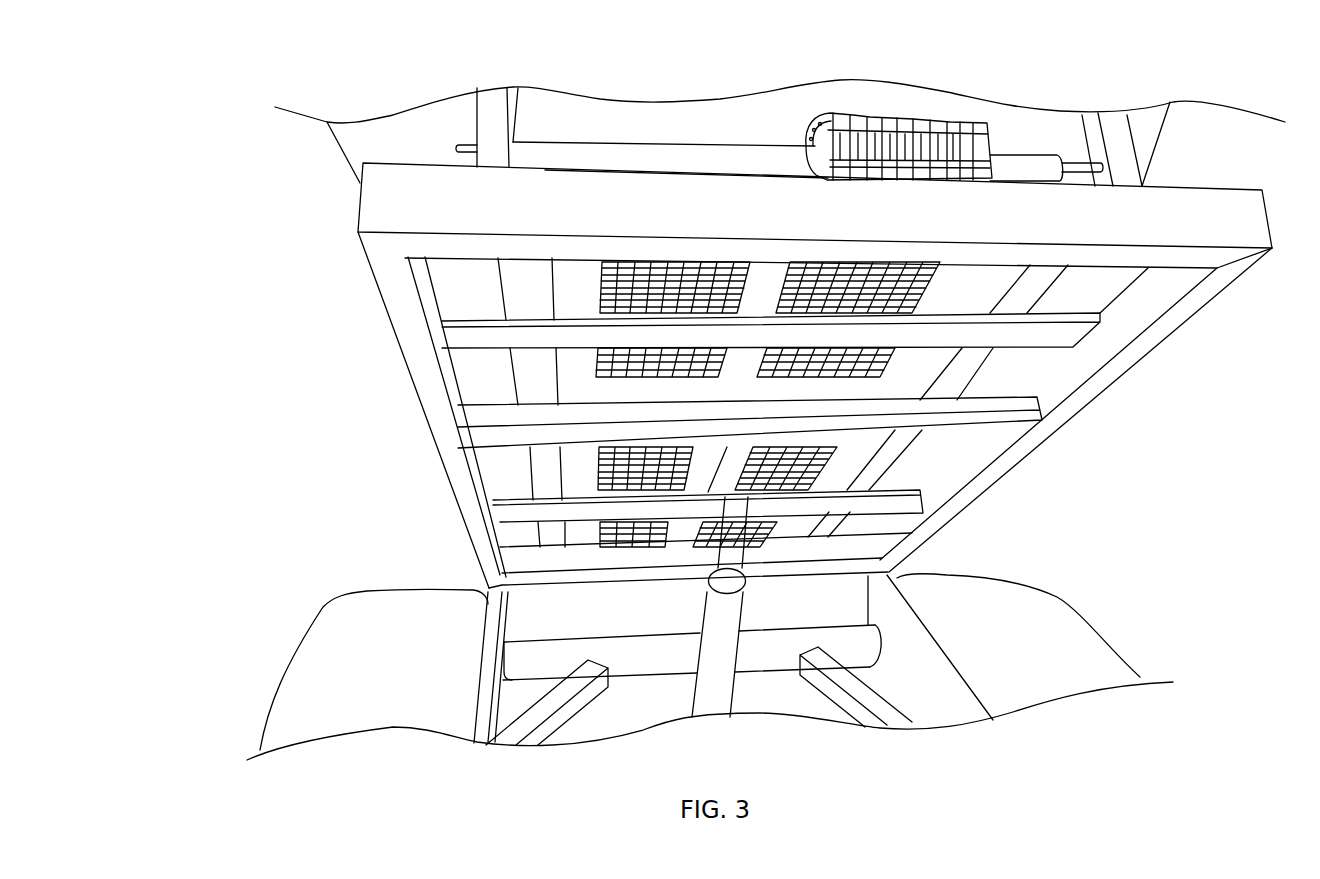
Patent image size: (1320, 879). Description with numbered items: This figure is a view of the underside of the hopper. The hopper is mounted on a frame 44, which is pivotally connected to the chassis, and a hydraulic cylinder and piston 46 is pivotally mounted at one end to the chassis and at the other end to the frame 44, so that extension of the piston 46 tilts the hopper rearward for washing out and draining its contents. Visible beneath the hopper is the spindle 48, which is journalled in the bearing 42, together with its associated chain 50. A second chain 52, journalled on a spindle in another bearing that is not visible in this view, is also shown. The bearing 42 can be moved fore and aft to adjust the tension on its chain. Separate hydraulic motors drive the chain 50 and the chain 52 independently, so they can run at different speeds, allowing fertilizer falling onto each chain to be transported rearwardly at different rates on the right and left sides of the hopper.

The bearing 42 is at (457, 148).
The frame 44 is at (400, 247).
The hydraulic cylinder and piston 46 is at (720, 617).
The spindle 48 is at (669, 157).
The chain 50 is at (888, 118).
The chain 52 is at (630, 268).